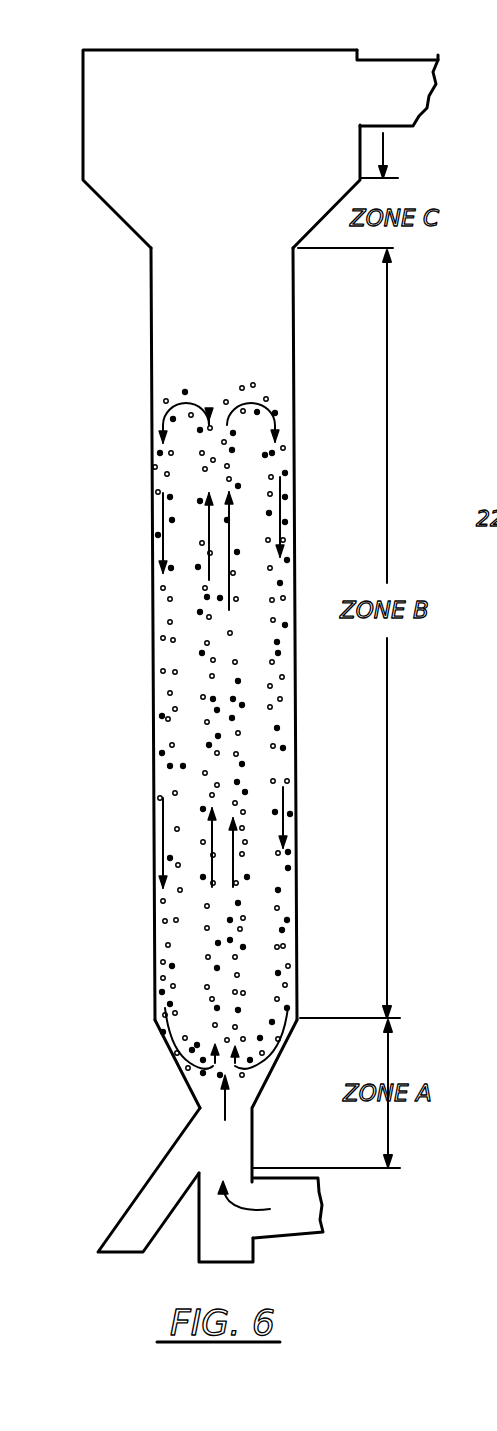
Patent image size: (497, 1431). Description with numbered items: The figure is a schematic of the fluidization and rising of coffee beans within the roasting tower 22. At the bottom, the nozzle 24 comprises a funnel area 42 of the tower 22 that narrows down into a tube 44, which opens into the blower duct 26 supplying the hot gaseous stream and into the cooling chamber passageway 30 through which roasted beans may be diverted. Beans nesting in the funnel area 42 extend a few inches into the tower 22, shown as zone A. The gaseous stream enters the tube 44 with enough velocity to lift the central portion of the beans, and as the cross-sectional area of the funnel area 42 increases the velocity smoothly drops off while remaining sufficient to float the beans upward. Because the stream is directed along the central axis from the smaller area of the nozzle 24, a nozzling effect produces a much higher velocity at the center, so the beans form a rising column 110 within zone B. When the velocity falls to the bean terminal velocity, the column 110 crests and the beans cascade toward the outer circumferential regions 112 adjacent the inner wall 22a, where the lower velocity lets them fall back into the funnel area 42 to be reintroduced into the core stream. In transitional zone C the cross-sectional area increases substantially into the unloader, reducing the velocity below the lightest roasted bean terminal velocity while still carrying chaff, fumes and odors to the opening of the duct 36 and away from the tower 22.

The tower 22 is at (142, 520).
The inner wall 22a is at (152, 465).
The nozzle 24 is at (186, 1251).
The blower duct 26 is at (290, 1236).
The cooling chamber passageway 30 is at (152, 1175).
The duct 36 is at (420, 59).
The funnel area 42 is at (177, 1053).
The tube 44 is at (252, 1138).
The rising column 110 is at (237, 772).
The outer circumferential regions 112 is at (296, 568).